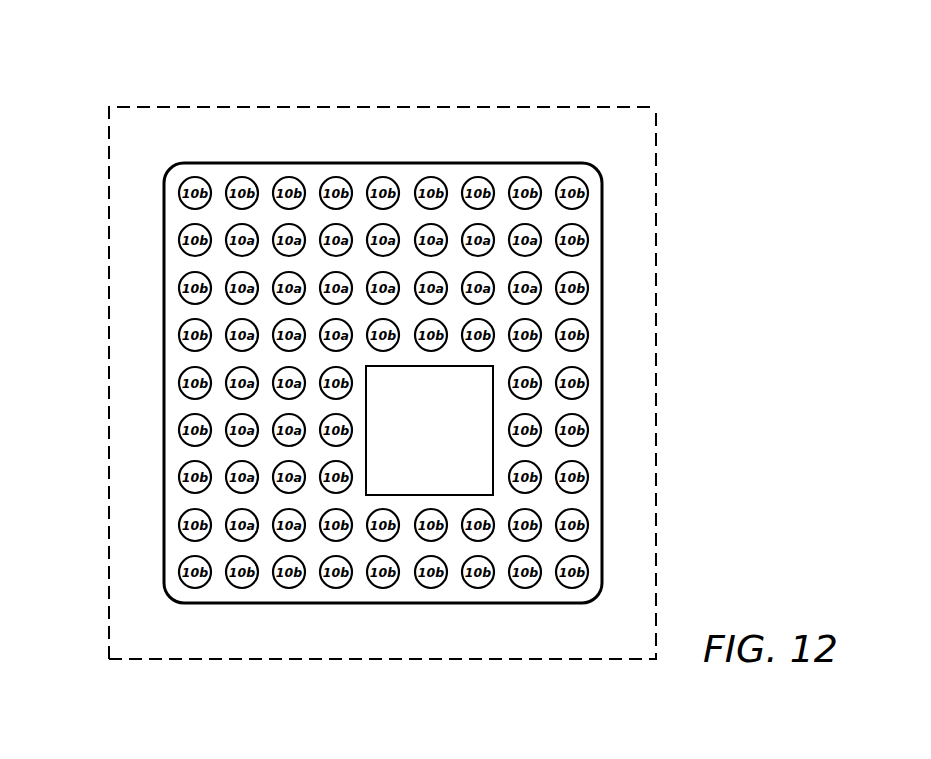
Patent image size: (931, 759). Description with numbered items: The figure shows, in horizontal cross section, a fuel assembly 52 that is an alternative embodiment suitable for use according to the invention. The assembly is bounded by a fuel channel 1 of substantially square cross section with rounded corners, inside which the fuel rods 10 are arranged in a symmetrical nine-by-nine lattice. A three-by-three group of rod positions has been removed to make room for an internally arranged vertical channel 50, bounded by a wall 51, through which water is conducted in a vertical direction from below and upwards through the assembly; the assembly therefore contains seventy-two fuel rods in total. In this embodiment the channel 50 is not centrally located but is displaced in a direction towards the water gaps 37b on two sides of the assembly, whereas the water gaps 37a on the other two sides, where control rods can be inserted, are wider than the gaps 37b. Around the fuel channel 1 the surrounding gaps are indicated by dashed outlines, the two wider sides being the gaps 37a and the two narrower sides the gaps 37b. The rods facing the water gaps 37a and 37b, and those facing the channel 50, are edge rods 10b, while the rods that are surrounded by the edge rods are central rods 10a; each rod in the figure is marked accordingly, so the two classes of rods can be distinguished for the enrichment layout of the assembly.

The fuel channel 1 is at (603, 268).
The fuel rods 10 is at (530, 182).
The central rods 10a is at (383, 382).
The edge rods 10b is at (383, 382).
The water gaps 37a is at (305, 125).
The water gaps 37b is at (403, 638).
The vertical channel 50 is at (482, 442).
The wall of the channel 51 is at (452, 496).
The fuel assembly 52 is at (615, 337).